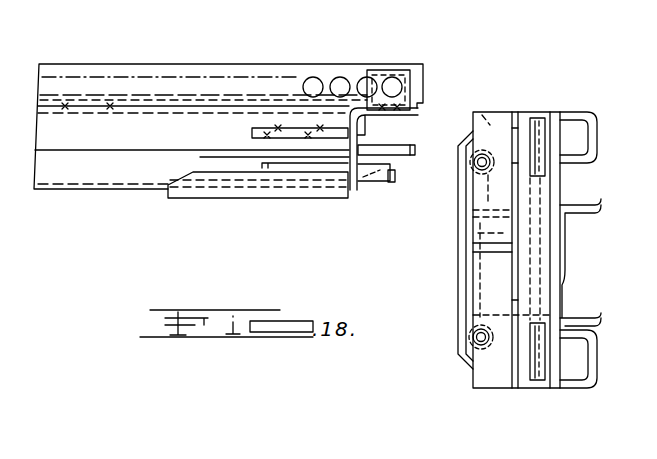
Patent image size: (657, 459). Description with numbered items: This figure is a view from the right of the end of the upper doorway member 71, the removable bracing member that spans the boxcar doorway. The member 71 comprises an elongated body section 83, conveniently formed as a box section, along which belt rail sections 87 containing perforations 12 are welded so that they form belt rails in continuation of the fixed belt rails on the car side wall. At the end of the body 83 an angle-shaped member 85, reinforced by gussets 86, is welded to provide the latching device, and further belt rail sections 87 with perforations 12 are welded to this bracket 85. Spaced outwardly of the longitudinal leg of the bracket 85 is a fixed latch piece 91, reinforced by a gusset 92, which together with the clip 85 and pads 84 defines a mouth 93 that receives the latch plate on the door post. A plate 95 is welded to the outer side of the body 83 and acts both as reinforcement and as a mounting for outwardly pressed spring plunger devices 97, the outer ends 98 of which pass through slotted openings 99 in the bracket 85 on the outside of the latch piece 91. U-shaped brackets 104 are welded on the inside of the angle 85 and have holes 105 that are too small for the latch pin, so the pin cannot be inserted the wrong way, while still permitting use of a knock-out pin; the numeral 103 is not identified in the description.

The upper doorway member 71 is at (159, 52).
The belt rail sections 87 is at (213, 64).
The perforations 12 is at (340, 77).
The U-shaped brackets 104 is at (383, 70).
The pads 84 is at (368, 122).
The angle-shaped member 85 is at (378, 125).
The gussets 86 is at (252, 131).
The mouth 93 is at (384, 149).
The fixed latch piece 91 is at (410, 143).
The gusset 92 is at (395, 168).
The slotted openings 99 is at (475, 166).
The outer ends 98 is at (386, 181).
The elongated body section 83 is at (117, 173).
The plate 95 is at (181, 182).
The spring plunger devices 97 is at (265, 163).
The holes 105 is at (597, 138).
The lower hook corner 103 is at (597, 353).